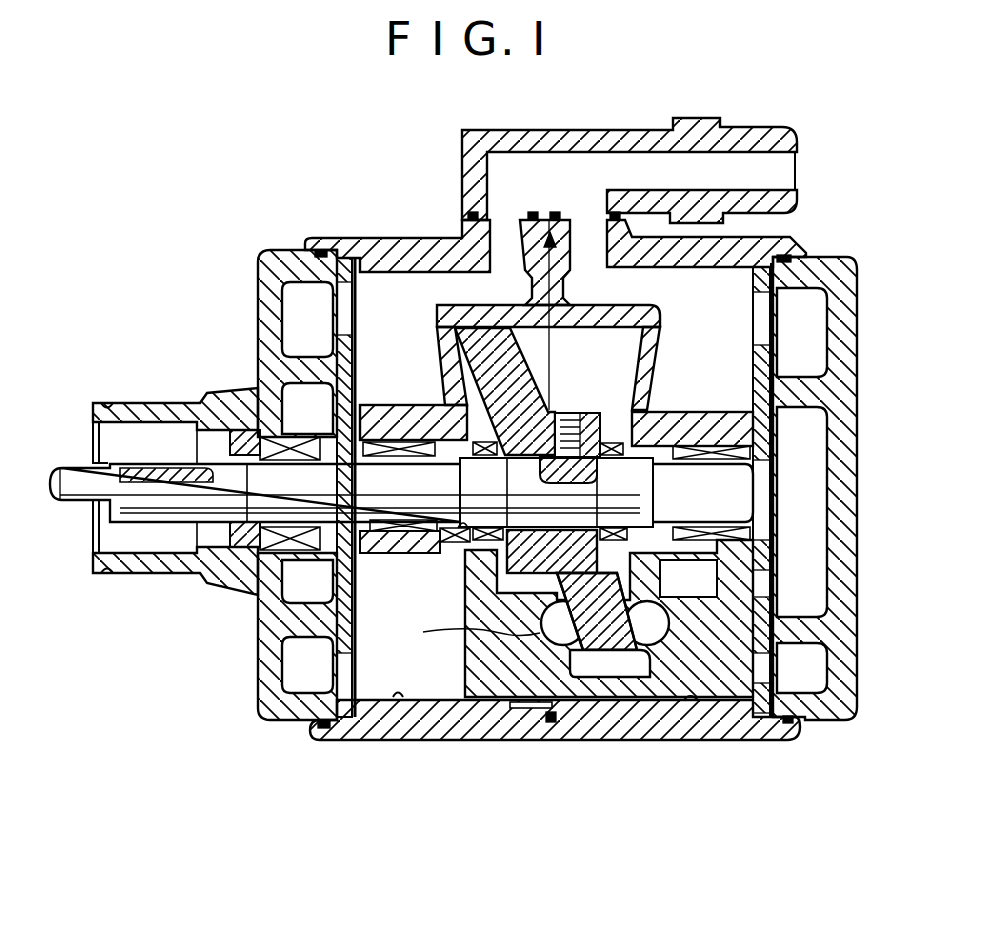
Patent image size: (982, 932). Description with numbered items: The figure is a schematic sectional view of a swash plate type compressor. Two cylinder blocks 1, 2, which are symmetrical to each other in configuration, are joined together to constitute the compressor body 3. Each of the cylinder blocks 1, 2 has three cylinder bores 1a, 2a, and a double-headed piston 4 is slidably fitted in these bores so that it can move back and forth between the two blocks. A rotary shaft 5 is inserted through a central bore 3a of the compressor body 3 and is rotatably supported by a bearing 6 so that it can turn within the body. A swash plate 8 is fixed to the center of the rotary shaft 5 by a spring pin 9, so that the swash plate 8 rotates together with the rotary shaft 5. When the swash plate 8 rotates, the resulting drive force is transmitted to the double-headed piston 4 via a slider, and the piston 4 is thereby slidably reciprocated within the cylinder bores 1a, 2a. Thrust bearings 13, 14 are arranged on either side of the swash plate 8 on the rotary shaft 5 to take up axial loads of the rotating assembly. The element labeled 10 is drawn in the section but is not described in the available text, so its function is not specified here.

The cylinder block 1 is at (623, 700).
The cylinder bore 1a is at (690, 702).
The cylinder block 2 is at (470, 733).
The cylinder bore 2a is at (398, 698).
The compressor body 3 is at (422, 206).
The central bore 3a is at (463, 530).
The double-headed piston 4 is at (533, 695).
The rotary shaft 5 is at (400, 540).
The bearing 6 is at (708, 414).
The swash plate 8 is at (467, 350).
The spring pin 9 is at (574, 410).
The passage 10 is at (665, 576).
The thrust bearing 13 is at (610, 457).
The thrust bearing 14 is at (488, 457).